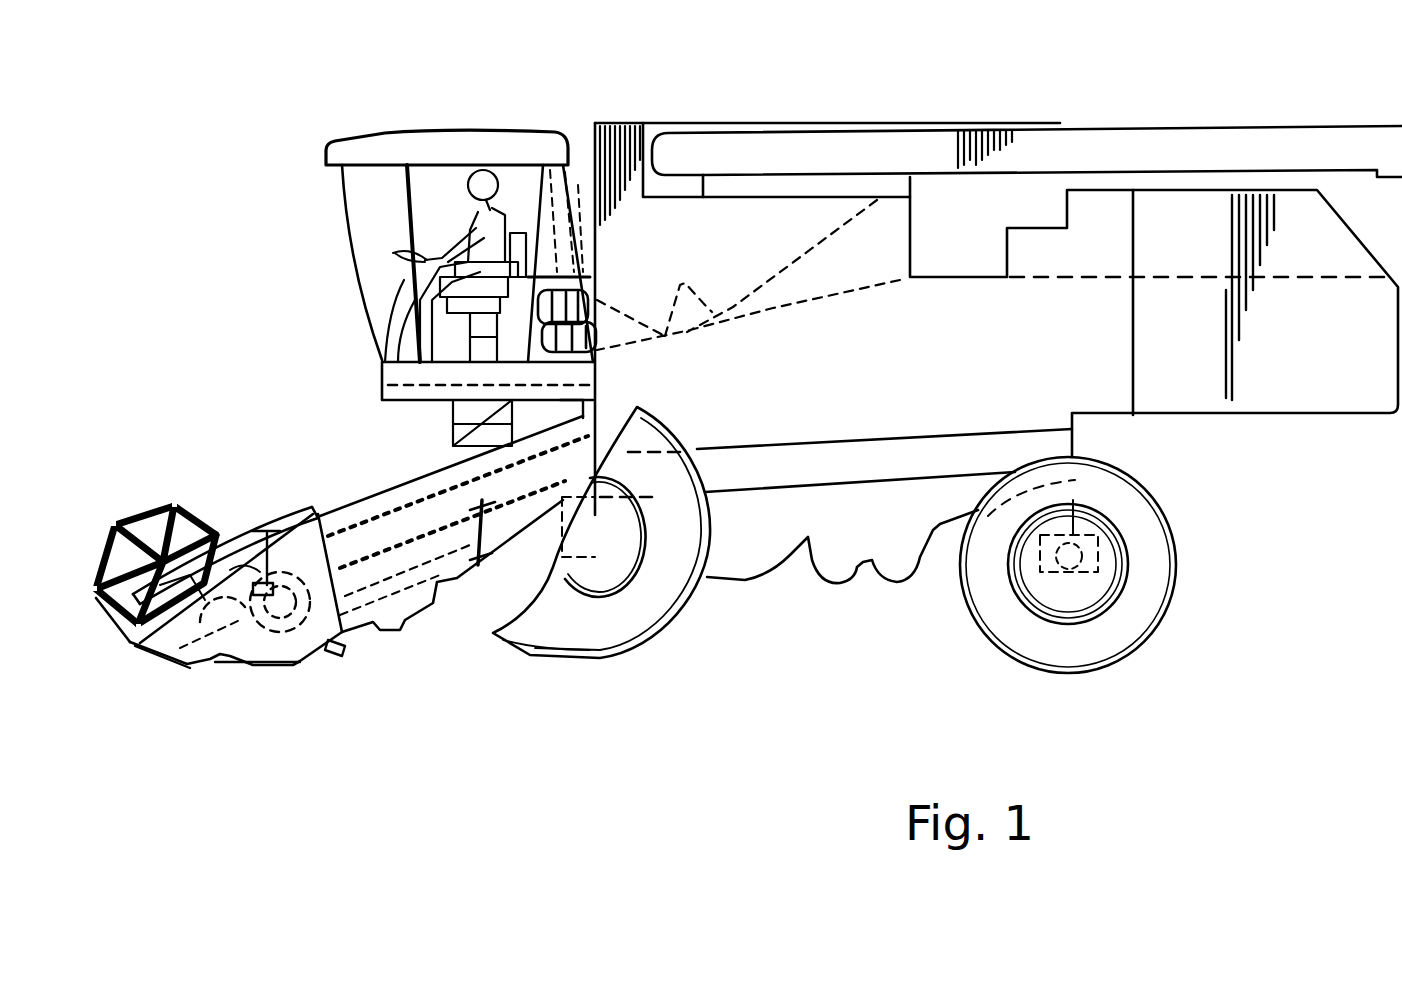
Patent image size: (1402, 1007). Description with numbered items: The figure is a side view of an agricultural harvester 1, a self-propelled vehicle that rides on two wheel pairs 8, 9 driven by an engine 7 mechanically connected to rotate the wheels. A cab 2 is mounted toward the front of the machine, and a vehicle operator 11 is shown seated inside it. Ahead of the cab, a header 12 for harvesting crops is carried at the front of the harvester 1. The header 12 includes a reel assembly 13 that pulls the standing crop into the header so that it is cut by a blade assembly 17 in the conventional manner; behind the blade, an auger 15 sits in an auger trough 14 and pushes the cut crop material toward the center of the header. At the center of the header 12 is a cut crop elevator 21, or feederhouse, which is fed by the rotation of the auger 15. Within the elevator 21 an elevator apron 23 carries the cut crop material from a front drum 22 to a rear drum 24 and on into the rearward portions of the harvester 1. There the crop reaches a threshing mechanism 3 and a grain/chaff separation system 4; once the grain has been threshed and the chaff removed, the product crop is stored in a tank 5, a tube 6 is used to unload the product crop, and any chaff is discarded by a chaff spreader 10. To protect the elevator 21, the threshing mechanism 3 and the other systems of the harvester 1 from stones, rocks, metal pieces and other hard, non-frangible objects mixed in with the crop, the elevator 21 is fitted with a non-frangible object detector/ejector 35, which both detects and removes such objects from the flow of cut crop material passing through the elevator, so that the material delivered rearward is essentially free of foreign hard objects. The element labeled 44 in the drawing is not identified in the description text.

The agricultural harvester 1 is at (276, 122).
The cab 2 is at (474, 138).
The threshing mechanism 3 is at (690, 352).
The grain/chaff separation system 4 is at (762, 460).
The tank 5 is at (798, 207).
The tube 6 is at (1272, 130).
The engine 7 is at (1040, 185).
The wheel pair 8 is at (667, 590).
The wheel pair 9 is at (1137, 608).
The chaff spreader 10 is at (1323, 413).
The vehicle operator 11 is at (467, 227).
The header 12 is at (232, 437).
The reel assembly 13 is at (162, 497).
The auger trough 14 is at (298, 667).
The auger 15 is at (258, 667).
The blade assembly 17 is at (217, 669).
The cut crop elevator 21 is at (370, 470).
The front drum 22 is at (355, 555).
The elevator apron 23 is at (455, 500).
The rear drum 24 is at (600, 425).
The non-frangible object detector/ejector 35 is at (407, 640).
The pivot bar 44 is at (475, 592).